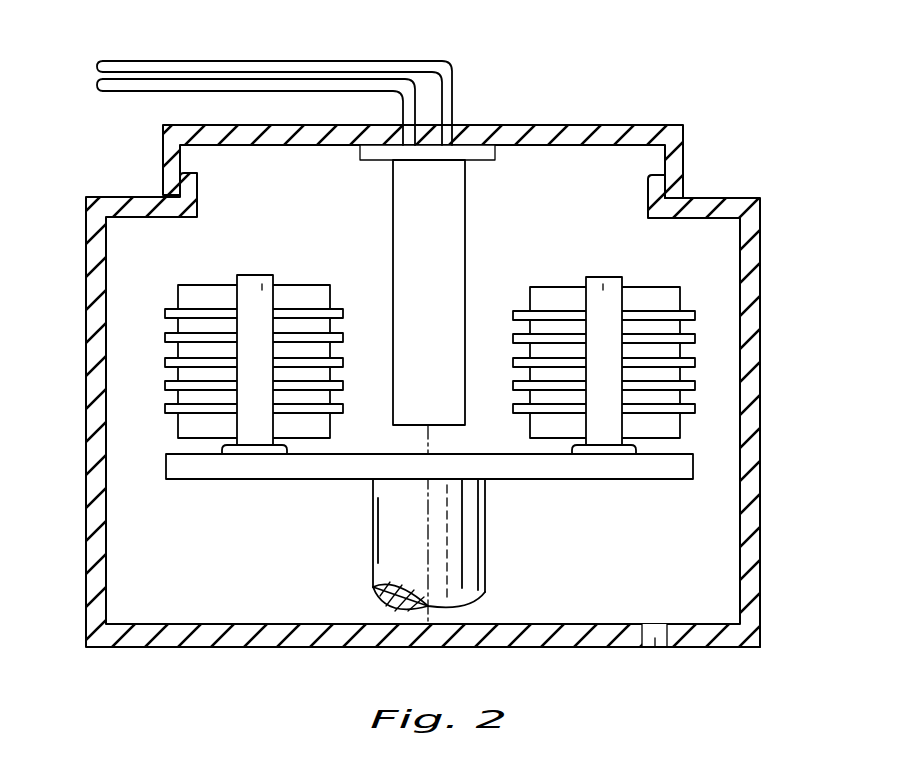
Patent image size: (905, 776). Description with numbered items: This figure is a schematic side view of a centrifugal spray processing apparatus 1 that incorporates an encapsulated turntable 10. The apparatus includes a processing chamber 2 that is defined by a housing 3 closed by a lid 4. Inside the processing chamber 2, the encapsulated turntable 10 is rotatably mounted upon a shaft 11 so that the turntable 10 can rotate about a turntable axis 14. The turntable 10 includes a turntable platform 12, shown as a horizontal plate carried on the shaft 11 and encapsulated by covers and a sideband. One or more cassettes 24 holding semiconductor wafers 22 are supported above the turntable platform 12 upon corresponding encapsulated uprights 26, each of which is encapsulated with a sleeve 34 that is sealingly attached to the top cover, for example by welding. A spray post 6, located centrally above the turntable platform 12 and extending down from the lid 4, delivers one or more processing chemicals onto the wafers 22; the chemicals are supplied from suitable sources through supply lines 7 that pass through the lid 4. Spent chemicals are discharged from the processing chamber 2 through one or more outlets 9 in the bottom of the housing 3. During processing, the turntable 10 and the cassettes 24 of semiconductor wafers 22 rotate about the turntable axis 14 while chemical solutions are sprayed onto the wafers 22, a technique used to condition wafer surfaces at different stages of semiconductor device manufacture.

The centrifugal spray processing apparatus 1 is at (686, 82).
The processing chamber 2 is at (710, 262).
The housing 3 is at (760, 291).
The lid 4 is at (551, 128).
The spray post 6 is at (400, 213).
The supply lines 7 is at (166, 82).
The outlets 9 is at (655, 641).
The encapsulated turntable 10 is at (434, 416).
The shaft 11 is at (437, 545).
The turntable platform 12 is at (668, 476).
The turntable axis 14 is at (430, 574).
The semiconductor wafers 22 is at (173, 373).
The cassettes 24 is at (212, 295).
The encapsulated uprights 26 is at (262, 284).
The sleeve 34 is at (245, 282).